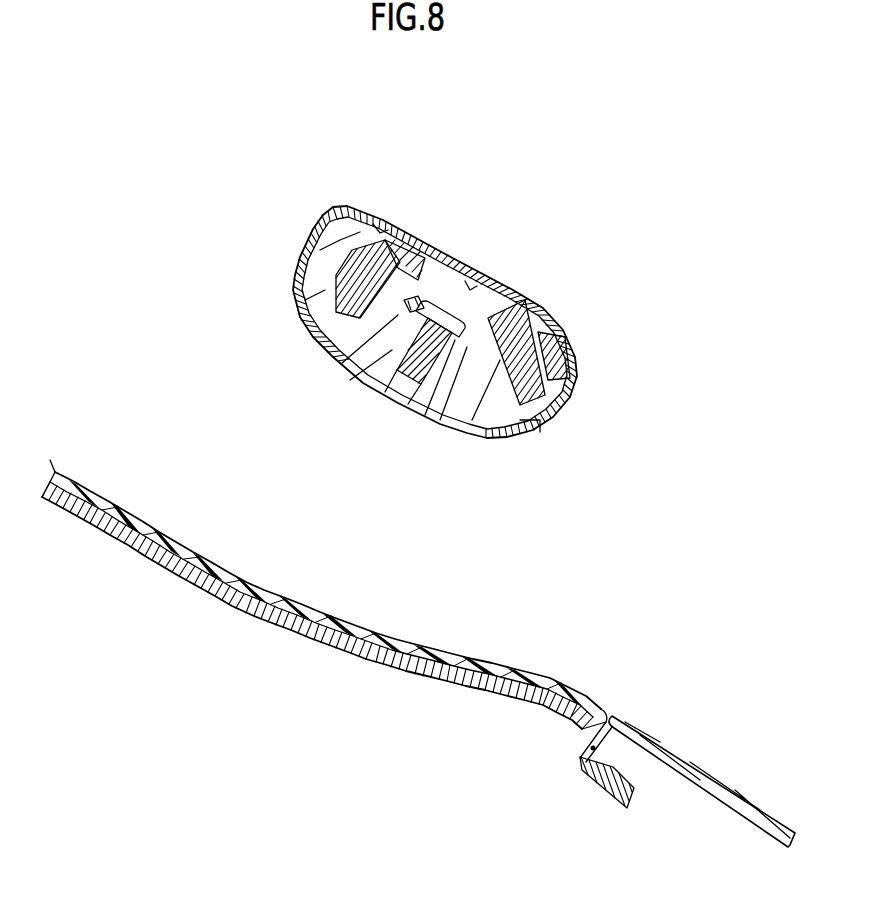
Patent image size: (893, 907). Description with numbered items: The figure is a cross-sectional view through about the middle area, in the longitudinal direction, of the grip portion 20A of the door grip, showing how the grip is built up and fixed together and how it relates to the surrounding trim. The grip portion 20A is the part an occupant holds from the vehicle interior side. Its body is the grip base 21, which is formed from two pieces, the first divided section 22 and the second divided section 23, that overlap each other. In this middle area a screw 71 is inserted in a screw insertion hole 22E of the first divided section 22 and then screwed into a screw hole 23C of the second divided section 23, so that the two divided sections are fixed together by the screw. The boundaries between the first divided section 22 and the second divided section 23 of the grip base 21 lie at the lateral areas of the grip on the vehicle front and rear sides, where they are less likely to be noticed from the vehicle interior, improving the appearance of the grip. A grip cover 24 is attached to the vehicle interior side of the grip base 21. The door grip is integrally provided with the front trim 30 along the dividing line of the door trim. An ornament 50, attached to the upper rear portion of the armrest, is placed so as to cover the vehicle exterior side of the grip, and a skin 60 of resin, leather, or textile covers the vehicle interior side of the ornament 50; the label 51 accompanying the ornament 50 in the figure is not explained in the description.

The grip portion 20A is at (250, 170).
The grip base 21 is at (688, 372).
The first divided section 22 is at (575, 365).
The screw insertion hole 22E is at (437, 303).
The second divided section 23 is at (560, 443).
The screw hole 23C is at (423, 327).
The grip cover 24 is at (503, 273).
The front trim 30 is at (743, 798).
The ornament 50 is at (80, 520).
The board base layer 51 is at (312, 613).
The skin 60 is at (97, 493).
The screw 71 is at (449, 316).